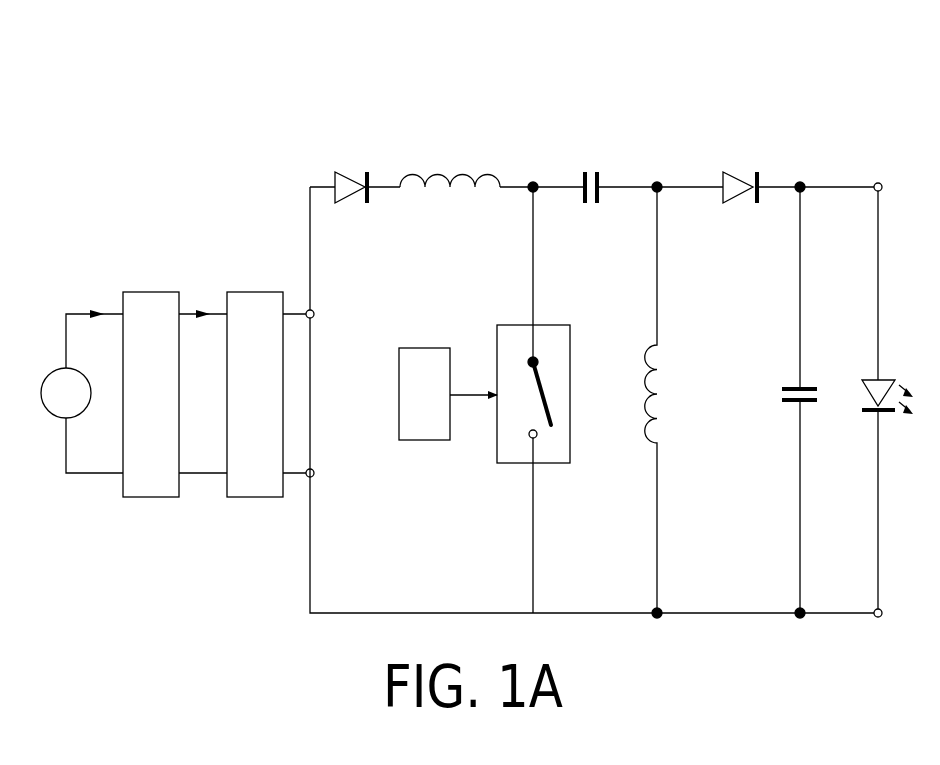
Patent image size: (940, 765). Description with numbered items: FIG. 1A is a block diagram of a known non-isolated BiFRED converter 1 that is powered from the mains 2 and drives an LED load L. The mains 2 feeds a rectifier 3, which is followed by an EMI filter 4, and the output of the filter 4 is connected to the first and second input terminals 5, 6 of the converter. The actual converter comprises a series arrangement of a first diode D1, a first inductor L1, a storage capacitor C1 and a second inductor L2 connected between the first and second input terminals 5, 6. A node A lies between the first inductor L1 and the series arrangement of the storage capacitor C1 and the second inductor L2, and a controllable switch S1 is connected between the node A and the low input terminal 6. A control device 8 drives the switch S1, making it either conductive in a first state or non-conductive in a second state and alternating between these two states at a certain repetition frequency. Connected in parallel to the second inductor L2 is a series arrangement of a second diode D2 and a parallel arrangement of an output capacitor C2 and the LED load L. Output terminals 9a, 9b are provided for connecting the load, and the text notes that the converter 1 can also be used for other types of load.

The non-isolated BiFRED converter 1 is at (84, 114).
The mains 2 is at (82, 391).
The rectifier 3 is at (175, 394).
The EMI filter 4 is at (266, 394).
The first input terminal 5 is at (315, 314).
The second input terminal 6 is at (315, 473).
The control device 8 is at (448, 394).
The output terminal 9a is at (877, 172).
The output terminal 9b is at (877, 632).
The first diode D1 is at (351, 173).
The first inductor L1 is at (450, 165).
The node A is at (534, 172).
The storage capacitor C1 is at (591, 173).
The second diode D2 is at (740, 173).
The controllable switch S1 is at (533, 400).
The second inductor L2 is at (666, 400).
The output capacitor C2 is at (782, 400).
The LED load L is at (877, 400).